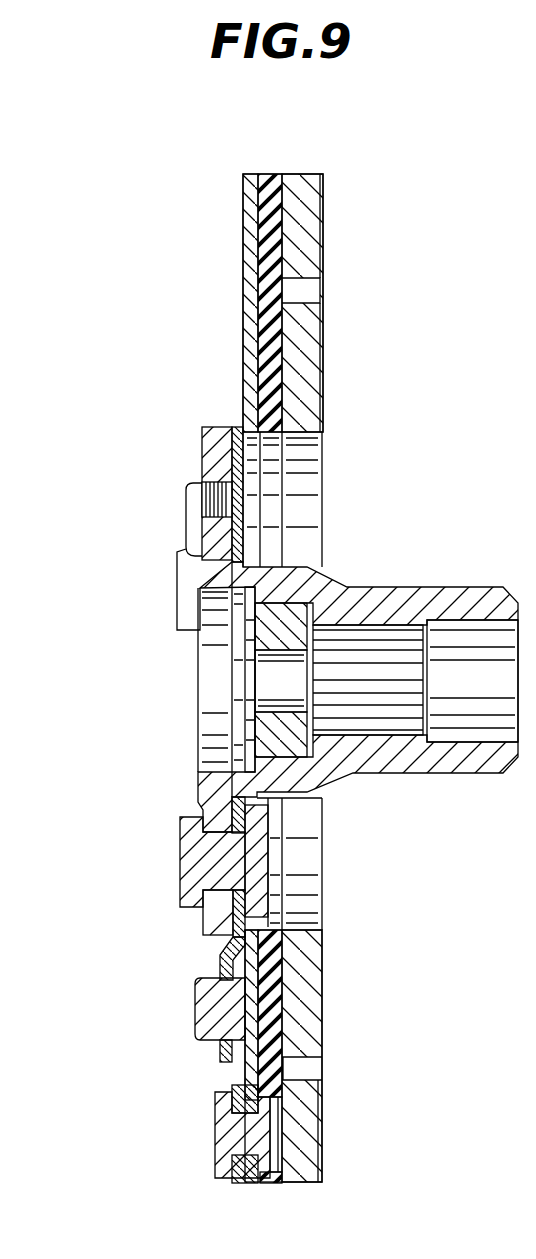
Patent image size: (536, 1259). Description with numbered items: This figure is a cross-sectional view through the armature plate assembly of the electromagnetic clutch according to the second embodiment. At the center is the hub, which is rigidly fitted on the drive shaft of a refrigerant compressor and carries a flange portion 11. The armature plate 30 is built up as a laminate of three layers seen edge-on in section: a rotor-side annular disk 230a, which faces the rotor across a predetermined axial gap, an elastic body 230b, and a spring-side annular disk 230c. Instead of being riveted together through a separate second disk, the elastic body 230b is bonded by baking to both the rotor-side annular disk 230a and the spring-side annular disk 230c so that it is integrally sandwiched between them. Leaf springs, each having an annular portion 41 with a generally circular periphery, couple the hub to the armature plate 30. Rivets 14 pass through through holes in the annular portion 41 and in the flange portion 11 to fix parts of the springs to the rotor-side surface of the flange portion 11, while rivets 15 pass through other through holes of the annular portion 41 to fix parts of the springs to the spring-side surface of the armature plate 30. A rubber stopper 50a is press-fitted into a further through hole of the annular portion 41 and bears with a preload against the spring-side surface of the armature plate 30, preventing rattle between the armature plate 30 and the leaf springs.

The armature plate 30 is at (447, 124).
The rotor-side annular disk 230a is at (322, 172).
The elastic body 230b is at (278, 174).
The spring-side annular disk 230c is at (243, 186).
The rivets 14 is at (182, 865).
The flange portion 11 is at (202, 932).
The rubber stopper 50a is at (195, 1008).
The rivets 15 is at (213, 1122).
The annular portion 41 is at (232, 1185).